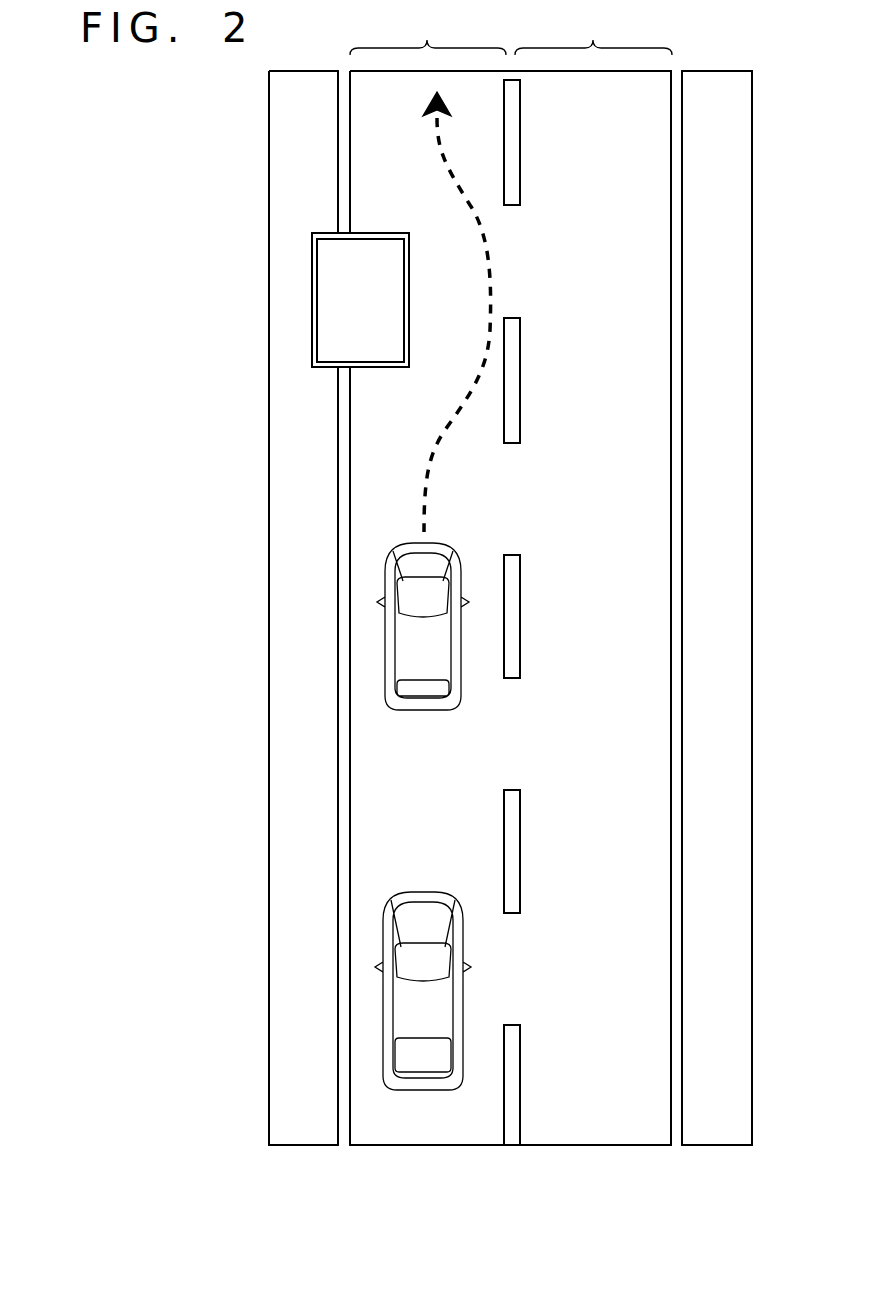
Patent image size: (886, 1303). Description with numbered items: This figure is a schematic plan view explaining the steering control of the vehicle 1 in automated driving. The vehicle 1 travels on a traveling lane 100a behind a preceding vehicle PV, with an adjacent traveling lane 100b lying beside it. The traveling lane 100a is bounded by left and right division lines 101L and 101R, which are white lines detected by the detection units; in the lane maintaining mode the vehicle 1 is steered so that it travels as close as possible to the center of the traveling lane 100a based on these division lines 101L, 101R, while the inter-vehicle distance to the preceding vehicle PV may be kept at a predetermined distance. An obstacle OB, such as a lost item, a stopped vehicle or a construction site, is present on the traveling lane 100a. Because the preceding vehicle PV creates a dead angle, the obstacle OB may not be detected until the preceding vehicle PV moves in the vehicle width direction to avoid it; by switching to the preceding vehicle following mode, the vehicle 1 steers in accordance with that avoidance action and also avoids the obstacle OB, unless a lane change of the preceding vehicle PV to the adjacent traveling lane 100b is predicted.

The vehicle 1 is at (385, 1040).
The preceding vehicle PV is at (388, 660).
The obstacle OB is at (317, 306).
The traveling lane 100a is at (428, 34).
The adjacent traveling lane 100b is at (593, 34).
The left division line 101L is at (343, 842).
The right division line 101R is at (512, 1110).